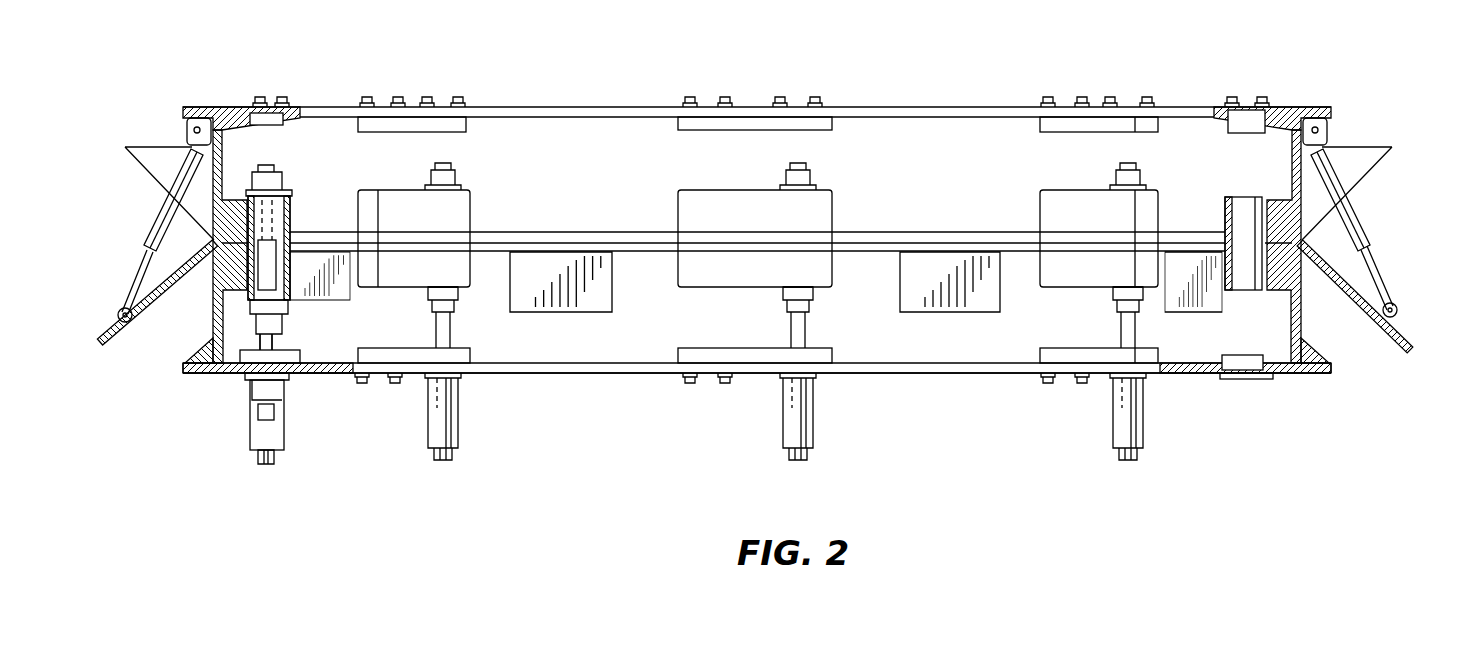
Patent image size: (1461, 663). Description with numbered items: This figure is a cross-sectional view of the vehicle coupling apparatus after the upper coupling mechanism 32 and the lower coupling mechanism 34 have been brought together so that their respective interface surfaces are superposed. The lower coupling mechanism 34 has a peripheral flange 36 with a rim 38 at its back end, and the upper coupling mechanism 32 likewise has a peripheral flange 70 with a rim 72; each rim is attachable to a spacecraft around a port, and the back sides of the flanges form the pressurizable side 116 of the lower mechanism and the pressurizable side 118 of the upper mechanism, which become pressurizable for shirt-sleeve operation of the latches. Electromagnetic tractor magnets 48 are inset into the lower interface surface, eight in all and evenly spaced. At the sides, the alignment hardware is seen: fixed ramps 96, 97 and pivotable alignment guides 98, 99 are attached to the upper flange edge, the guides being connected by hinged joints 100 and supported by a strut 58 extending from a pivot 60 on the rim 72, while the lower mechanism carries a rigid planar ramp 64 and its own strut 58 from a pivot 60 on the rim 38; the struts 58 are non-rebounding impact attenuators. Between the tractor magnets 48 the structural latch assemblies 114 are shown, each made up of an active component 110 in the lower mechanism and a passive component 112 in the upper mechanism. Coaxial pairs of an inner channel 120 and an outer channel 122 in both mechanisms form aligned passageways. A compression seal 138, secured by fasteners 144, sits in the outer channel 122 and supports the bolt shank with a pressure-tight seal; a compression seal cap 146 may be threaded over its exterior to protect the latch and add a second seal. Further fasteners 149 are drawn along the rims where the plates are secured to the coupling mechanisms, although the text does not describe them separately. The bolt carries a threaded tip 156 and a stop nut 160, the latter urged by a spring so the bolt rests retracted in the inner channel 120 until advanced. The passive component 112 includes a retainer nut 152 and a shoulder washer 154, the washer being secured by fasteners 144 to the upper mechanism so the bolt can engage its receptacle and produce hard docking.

The upper coupling mechanism 32 is at (616, 100).
The lower coupling mechanism 34 is at (597, 385).
The peripheral flange 36 is at (1300, 325).
The rim 38 is at (928, 375).
The electromagnetic tractor magnets 48 is at (610, 312).
The strut 58 is at (165, 210).
The pivot 60 is at (195, 128).
The ramp 64 is at (1398, 345).
The peripheral flange 70 is at (1290, 195).
The rim 72 is at (300, 107).
The ramp 96 is at (1360, 147).
The ramp 97 is at (140, 147).
The alignment guide 98 is at (1405, 335).
The alignment guide 99 is at (118, 332).
The hinged joints 100 is at (213, 243).
The active component 110 is at (283, 325).
The passive component 112 is at (285, 177).
The structural latch assembly 114 is at (238, 417).
The pressurizable side 116 is at (510, 375).
The pressurizable side 118 is at (532, 107).
The inner channel 120 is at (1240, 205).
The outer channel 122 is at (1245, 125).
The compression seal 138 is at (280, 395).
The fasteners 144 is at (258, 96).
The compression seal cap 146 is at (275, 455).
The bolt 149 is at (780, 97).
The retainer nut 152 is at (460, 183).
The shoulder washer 154 is at (470, 193).
The threaded tip 156 is at (292, 226).
The stop nut 160 is at (432, 295).